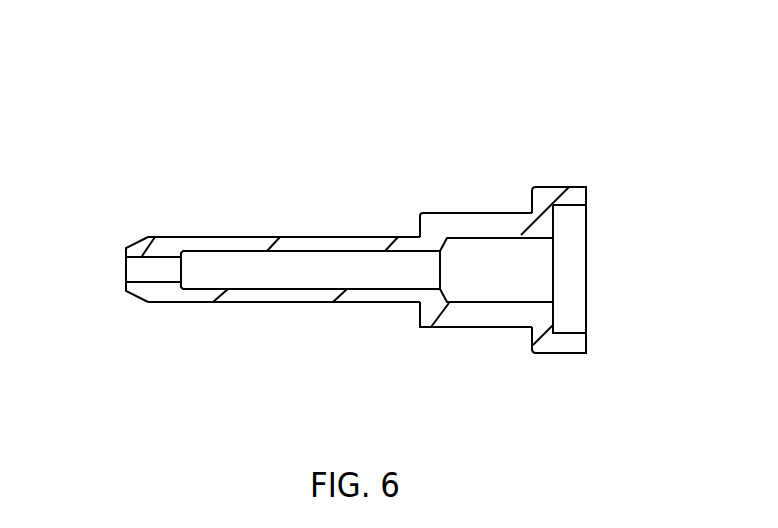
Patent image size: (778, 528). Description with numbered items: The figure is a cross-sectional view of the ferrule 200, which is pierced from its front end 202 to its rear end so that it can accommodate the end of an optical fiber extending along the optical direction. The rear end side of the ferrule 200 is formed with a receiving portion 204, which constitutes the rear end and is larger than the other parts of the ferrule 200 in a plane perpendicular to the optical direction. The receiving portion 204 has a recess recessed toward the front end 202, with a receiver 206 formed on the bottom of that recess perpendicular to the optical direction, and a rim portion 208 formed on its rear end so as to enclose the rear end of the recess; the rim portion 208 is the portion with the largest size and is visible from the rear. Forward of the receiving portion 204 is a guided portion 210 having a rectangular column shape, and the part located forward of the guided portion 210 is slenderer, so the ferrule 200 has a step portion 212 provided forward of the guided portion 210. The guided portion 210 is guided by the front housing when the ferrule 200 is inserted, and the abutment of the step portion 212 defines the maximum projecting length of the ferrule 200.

The ferrule 200 is at (371, 119).
The front end 202 is at (127, 289).
The receiving portion 204 is at (572, 355).
The receiver 206 is at (553, 318).
The rim portion 208 is at (586, 195).
The guided portion 210 is at (480, 222).
The step portion 212 is at (420, 325).